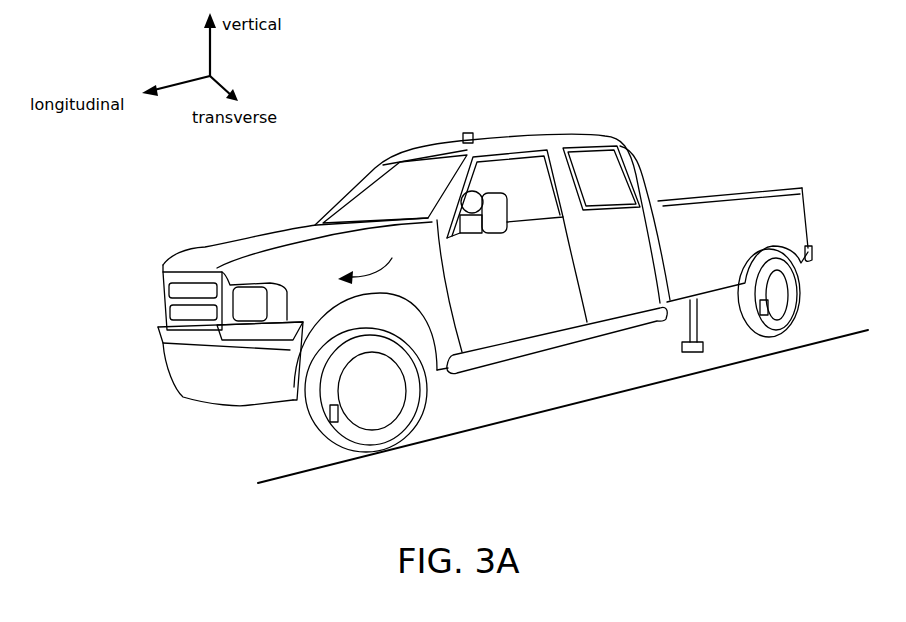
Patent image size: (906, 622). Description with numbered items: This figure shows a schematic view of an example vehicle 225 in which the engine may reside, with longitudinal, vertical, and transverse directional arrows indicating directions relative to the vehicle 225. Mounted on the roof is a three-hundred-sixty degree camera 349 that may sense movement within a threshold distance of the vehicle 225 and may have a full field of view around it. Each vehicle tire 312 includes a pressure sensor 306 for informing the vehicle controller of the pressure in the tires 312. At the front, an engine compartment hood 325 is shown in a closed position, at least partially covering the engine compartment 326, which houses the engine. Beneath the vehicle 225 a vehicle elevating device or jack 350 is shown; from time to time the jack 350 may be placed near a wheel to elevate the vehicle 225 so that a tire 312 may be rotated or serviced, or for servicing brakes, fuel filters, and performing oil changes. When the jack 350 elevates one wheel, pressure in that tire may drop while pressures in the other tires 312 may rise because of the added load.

The vehicle 225 is at (527, 320).
The pressure sensor 306 is at (338, 420).
The vehicle tire 312 is at (413, 403).
The engine compartment hood 325 is at (218, 262).
The engine compartment 326 is at (376, 260).
The 360 degree camera 349 is at (466, 132).
The jack 350 is at (693, 352).